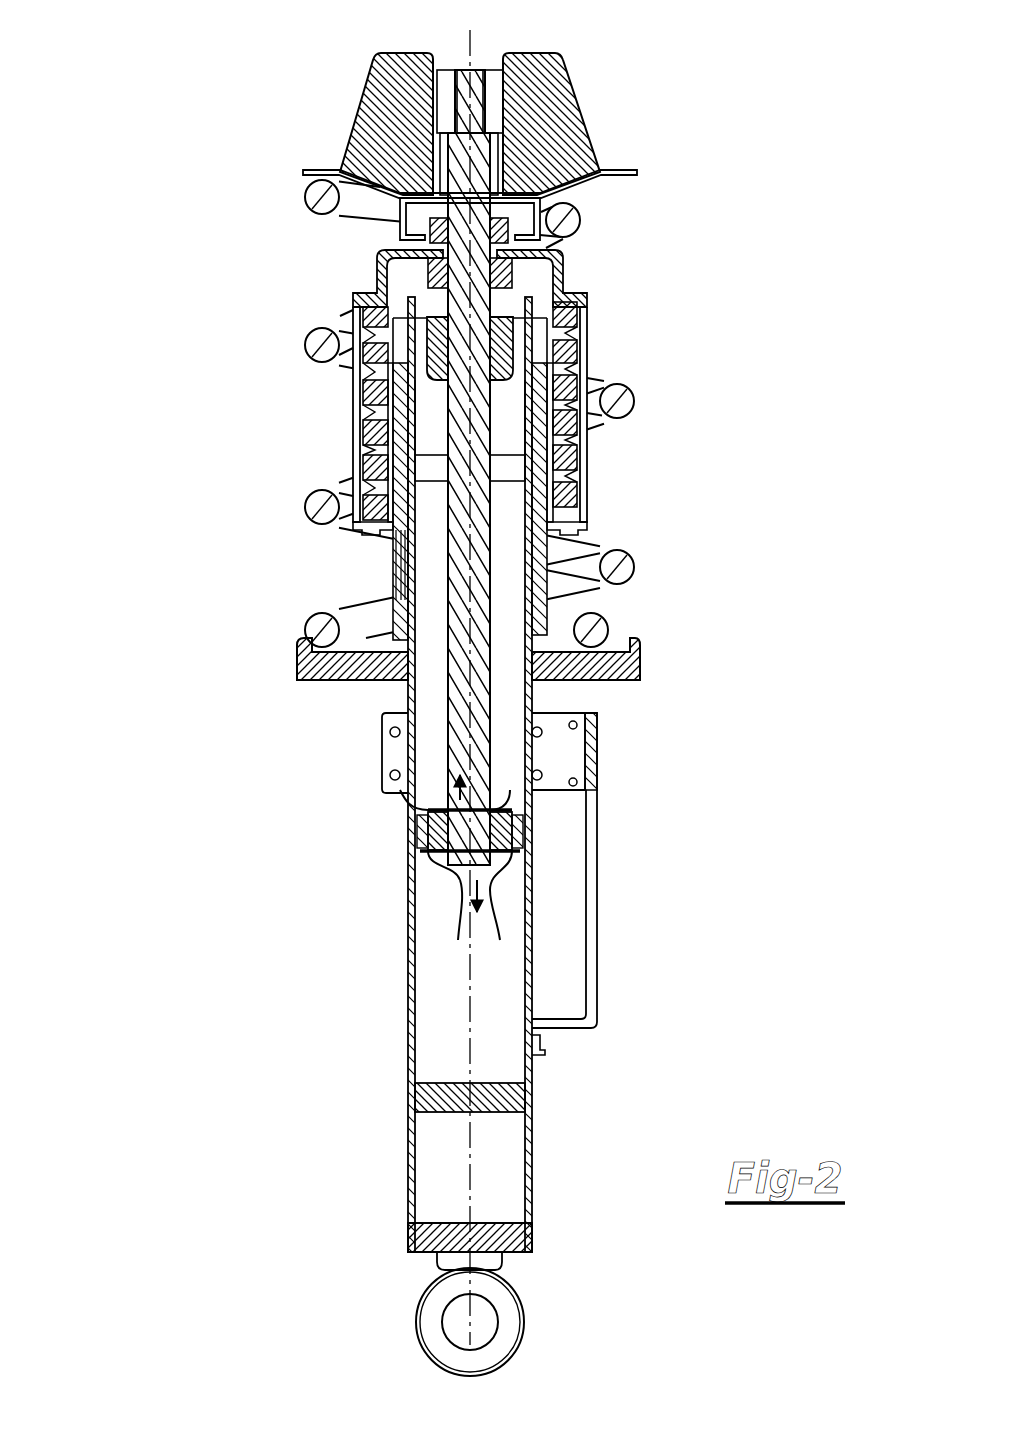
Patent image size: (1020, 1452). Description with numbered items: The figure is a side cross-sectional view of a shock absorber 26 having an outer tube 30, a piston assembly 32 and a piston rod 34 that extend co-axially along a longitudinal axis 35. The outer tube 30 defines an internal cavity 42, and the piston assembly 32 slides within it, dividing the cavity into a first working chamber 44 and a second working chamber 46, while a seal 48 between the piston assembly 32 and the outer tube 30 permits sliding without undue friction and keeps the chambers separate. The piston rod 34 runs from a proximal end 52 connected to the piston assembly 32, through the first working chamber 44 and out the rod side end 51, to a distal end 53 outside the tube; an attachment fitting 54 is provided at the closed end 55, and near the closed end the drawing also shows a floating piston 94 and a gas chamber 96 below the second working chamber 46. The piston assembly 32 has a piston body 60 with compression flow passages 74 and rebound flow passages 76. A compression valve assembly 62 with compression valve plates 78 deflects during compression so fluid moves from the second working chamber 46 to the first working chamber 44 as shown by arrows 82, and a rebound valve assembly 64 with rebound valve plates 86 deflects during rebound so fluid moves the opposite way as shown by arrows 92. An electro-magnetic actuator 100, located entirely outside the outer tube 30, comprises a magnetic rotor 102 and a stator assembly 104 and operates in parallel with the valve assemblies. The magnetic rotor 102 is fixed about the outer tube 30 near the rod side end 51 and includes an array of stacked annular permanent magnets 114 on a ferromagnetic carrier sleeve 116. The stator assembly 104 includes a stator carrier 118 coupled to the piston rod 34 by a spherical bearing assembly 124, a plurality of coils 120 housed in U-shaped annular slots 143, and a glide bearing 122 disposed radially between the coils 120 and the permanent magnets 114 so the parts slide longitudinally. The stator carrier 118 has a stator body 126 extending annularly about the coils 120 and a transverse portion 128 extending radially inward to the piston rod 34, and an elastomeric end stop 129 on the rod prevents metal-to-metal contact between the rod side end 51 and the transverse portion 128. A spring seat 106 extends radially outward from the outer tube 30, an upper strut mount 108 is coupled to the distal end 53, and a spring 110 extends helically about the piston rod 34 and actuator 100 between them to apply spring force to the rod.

The shock absorber 26 is at (177, 260).
The outer tube 30 is at (410, 1150).
The piston assembly 32 is at (405, 812).
The piston rod 34 is at (484, 340).
The longitudinal axis 35 is at (472, 45).
The internal cavity 42 is at (436, 1028).
The first working chamber 44 is at (438, 452).
The second working chamber 46 is at (493, 1057).
The seal 48 is at (418, 832).
The rod side end 51 is at (505, 457).
The proximal end 52 is at (463, 852).
The distal end 53 is at (472, 78).
The attachment fitting 54 is at (510, 1320).
The closed end 55 is at (432, 1237).
The piston body 60 is at (520, 838).
The compression valve assembly 62 is at (423, 805).
The rebound valve assembly 64 is at (424, 854).
The compression flow passages 74 is at (436, 826).
The rebound flow passages 76 is at (522, 848).
The compression valve plates 78 is at (522, 830).
The arrows 82 is at (452, 868).
The rebound valve plates 86 is at (512, 862).
The arrows 92 is at (484, 793).
The floating piston 94 is at (508, 1101).
The gas chamber 96 is at (497, 1177).
The electro-magnetic actuator 100 is at (699, 654).
The magnetic rotor 102 is at (552, 591).
The stator assembly 104 is at (591, 521).
The spring seat 106 is at (300, 656).
The upper strut mount 108 is at (604, 170).
The spring 110 is at (566, 220).
The permanent magnets 114 is at (393, 588).
The carrier sleeve 116 is at (628, 390).
The stator carrier 118 is at (379, 261).
The coils 120 is at (363, 315).
The glide bearing 122 is at (364, 332).
The spherical bearing assembly 124 is at (427, 221).
The stator body 126 is at (395, 410).
The transverse portion 128 is at (525, 268).
The end stop 129 is at (437, 357).
The annular slots 143 is at (580, 387).